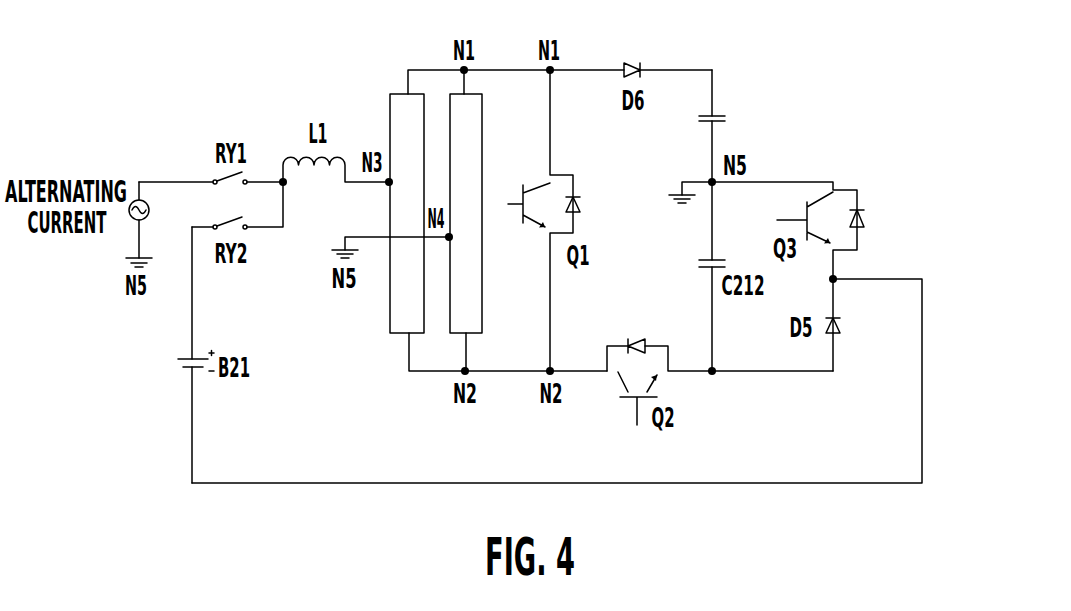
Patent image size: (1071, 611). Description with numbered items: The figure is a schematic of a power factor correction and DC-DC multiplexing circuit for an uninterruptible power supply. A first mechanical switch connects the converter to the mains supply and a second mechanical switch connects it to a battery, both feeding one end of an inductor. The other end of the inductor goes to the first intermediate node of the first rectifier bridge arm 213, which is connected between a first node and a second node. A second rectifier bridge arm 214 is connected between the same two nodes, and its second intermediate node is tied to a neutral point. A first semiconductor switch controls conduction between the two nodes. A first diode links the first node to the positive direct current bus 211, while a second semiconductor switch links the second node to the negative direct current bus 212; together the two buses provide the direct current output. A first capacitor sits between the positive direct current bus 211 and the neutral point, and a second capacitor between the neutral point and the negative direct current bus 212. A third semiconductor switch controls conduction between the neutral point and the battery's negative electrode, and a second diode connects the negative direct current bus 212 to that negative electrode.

The positive direct current bus 211 is at (714, 73).
The negative direct current bus 212 is at (714, 374).
The first rectifier bridge arm 213 is at (397, 94).
The second rectifier bridge arm 214 is at (482, 94).